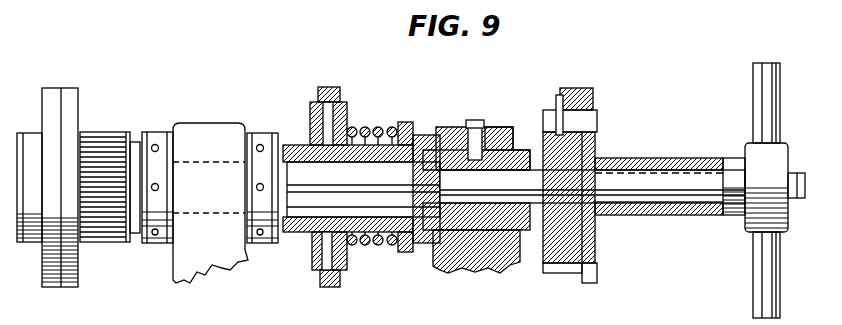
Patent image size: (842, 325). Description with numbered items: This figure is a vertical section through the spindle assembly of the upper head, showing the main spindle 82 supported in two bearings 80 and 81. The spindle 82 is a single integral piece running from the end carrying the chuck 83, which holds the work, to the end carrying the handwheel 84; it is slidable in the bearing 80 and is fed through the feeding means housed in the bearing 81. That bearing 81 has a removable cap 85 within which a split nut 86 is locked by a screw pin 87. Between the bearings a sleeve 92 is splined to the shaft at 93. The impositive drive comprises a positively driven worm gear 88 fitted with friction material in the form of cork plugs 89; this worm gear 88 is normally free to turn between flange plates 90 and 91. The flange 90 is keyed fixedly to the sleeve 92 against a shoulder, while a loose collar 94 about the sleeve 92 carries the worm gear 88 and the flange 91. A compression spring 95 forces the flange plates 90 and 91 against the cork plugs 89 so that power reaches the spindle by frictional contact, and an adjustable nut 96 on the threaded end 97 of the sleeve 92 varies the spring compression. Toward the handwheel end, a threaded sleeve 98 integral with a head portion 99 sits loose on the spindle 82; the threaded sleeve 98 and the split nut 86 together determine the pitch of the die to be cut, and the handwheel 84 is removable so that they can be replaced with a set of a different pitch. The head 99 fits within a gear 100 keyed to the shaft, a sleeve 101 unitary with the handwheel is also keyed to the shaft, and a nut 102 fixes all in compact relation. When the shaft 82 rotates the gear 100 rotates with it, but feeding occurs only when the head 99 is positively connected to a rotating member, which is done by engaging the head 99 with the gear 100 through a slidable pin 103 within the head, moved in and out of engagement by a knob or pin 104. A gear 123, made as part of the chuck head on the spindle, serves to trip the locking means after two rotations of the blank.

The bearing 80 is at (200, 132).
The bearing 81 is at (495, 263).
The main spindle 82 is at (533, 172).
The chuck 83 is at (68, 92).
The handwheel 84 is at (748, 232).
The removable cap 85 is at (475, 120).
The split nut 86 is at (433, 137).
The screw pin 87 is at (488, 125).
The worm gear 88 is at (343, 97).
The cork plugs 89 is at (325, 95).
The flange plate 90 is at (312, 260).
The flange plate 91 is at (353, 253).
The sleeve 92 is at (292, 143).
The spline 93 is at (340, 193).
The loose collar 94 is at (357, 245).
The compression spring 95 is at (365, 127).
The adjustable nut 96 is at (422, 133).
The threaded end 97 is at (455, 133).
The threaded sleeve 98 is at (535, 217).
The head portion 99 is at (560, 265).
The gear 100 is at (596, 277).
The sleeve 101 is at (677, 216).
The nut 102 is at (790, 180).
The slidable pin 103 is at (600, 127).
The knob or pin 104 is at (567, 88).
The gear 123 is at (107, 132).